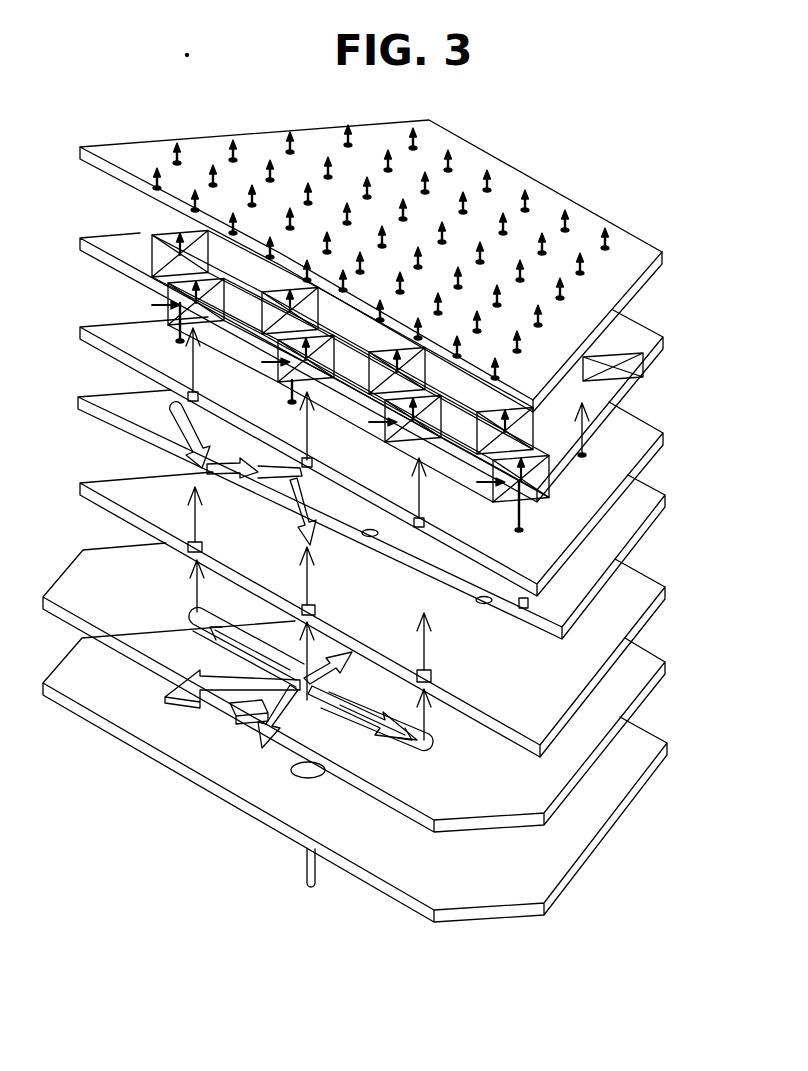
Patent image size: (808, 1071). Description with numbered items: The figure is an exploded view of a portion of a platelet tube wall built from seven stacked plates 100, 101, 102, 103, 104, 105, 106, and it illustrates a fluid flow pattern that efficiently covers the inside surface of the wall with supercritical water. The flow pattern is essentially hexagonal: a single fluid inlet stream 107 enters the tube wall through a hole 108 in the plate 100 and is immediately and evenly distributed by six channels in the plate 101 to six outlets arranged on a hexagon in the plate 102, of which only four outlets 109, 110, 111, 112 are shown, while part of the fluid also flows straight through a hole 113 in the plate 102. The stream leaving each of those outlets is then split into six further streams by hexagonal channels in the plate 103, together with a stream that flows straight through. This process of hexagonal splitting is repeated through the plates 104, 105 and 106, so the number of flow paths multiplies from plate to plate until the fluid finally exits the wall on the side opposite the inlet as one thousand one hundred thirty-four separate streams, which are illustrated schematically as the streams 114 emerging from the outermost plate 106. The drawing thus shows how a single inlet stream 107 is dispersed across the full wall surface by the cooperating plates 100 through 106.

The plate 100 is at (667, 743).
The plate 101 is at (665, 662).
The plate 102 is at (665, 587).
The plate 103 is at (665, 495).
The plate 104 is at (663, 433).
The plate 105 is at (663, 338).
The plate 106 is at (663, 252).
The fluid inlet stream 107 is at (306, 870).
The hole 108 is at (291, 768).
The outlet 109 is at (203, 545).
The outlet 110 is at (431, 673).
The outlet 111 is at (368, 538).
The outlet 112 is at (475, 596).
The hole 113 is at (315, 607).
The separate streams 114 is at (527, 188).